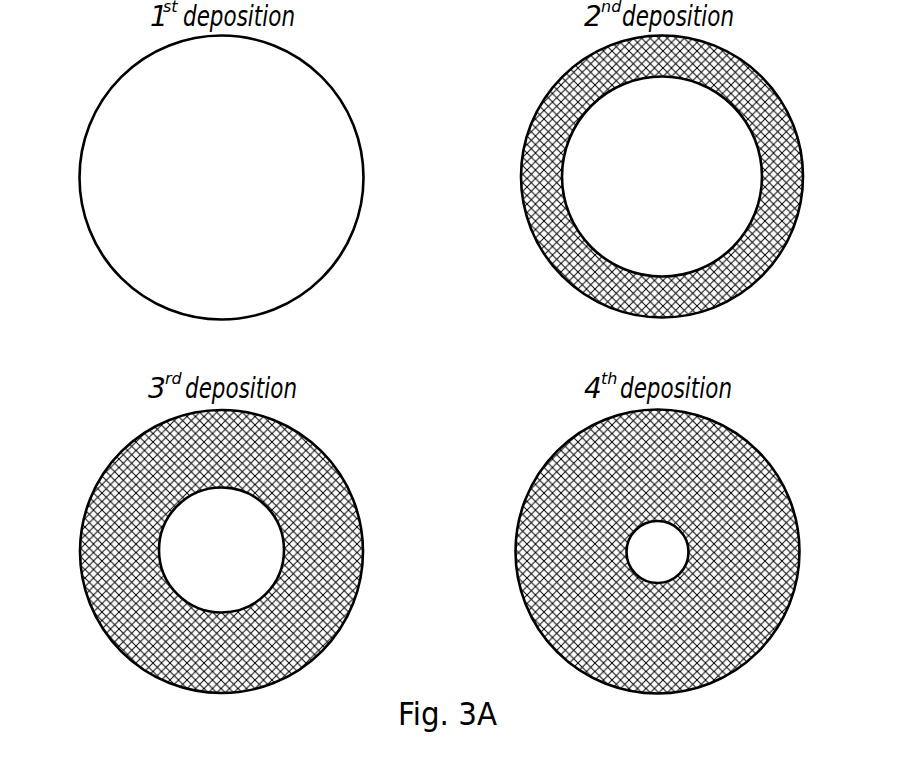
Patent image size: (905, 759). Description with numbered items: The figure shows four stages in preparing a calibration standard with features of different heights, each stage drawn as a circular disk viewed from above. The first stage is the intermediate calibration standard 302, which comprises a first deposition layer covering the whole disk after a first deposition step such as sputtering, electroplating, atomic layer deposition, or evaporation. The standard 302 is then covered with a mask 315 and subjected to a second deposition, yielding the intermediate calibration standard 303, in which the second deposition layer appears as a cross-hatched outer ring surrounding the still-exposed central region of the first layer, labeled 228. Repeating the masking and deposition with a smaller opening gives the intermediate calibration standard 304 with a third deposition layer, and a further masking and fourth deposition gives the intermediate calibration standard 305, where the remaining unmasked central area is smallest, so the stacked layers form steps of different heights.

The intermediate calibration standard 302 is at (203, 177).
The intermediate calibration standard 303 is at (560, 177).
The intermediate calibration standard 304 is at (201, 547).
The intermediate calibration standard 305 is at (631, 548).
The first deposited material 228 is at (607, 173).
The mask 315 is at (615, 293).